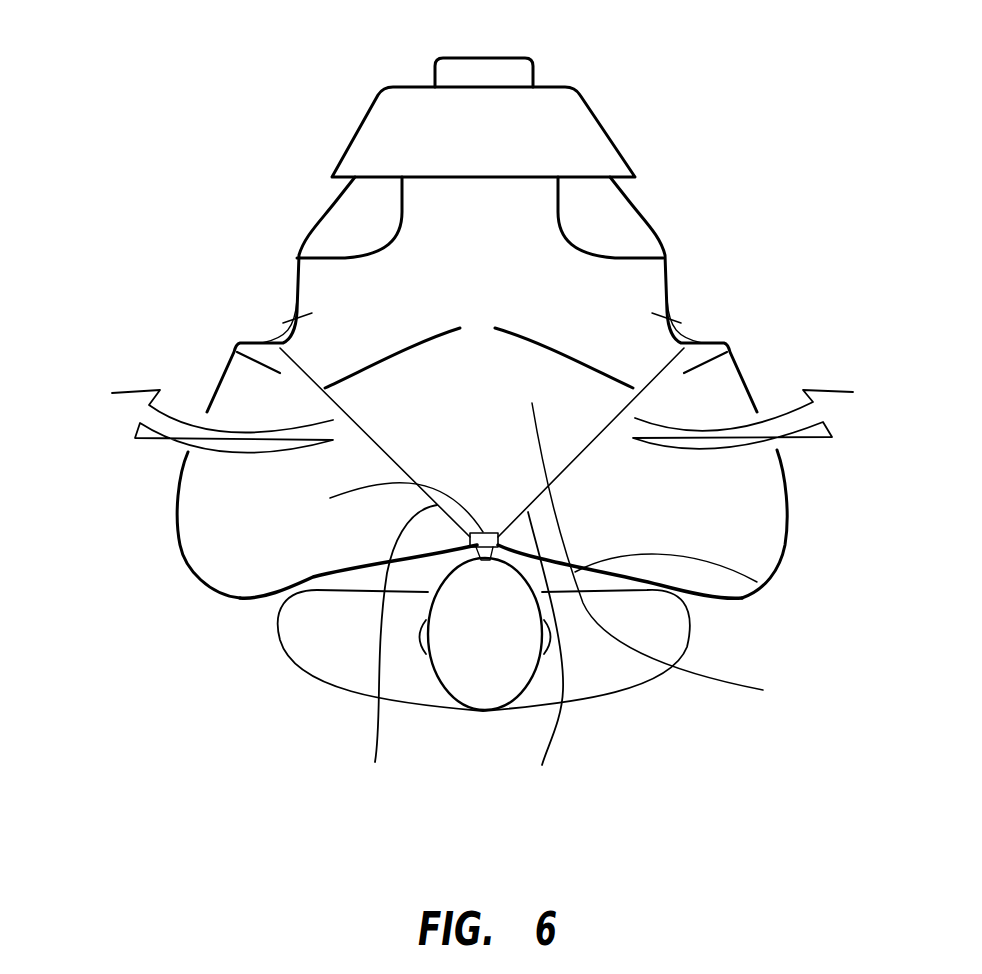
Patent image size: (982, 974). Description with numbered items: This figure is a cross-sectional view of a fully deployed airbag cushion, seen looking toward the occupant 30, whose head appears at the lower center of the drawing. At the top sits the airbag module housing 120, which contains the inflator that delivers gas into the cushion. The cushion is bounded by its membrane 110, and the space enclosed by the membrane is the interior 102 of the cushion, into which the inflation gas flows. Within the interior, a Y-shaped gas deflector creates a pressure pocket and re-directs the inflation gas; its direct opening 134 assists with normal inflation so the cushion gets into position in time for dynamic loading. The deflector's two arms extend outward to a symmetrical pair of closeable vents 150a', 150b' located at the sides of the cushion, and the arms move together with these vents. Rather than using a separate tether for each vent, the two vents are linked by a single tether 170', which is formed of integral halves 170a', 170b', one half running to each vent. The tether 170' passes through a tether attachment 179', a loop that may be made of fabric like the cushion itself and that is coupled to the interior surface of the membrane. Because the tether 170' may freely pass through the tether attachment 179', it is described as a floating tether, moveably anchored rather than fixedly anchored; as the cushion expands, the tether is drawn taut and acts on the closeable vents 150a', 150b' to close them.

The airbag module housing 120 is at (506, 145).
The closeable vent 150a' is at (214, 280).
The closeable vent 150b' is at (762, 283).
The interior of the airbag cushion 102 is at (504, 462).
The membrane 110 is at (757, 582).
The direct opening of gas deflector 134 is at (670, 553).
The tether attachment 179' is at (280, 540).
The occupant 30 is at (501, 648).
The tether half 170a' is at (379, 651).
The tether half 170b' is at (528, 655).
The tether 170' is at (444, 827).